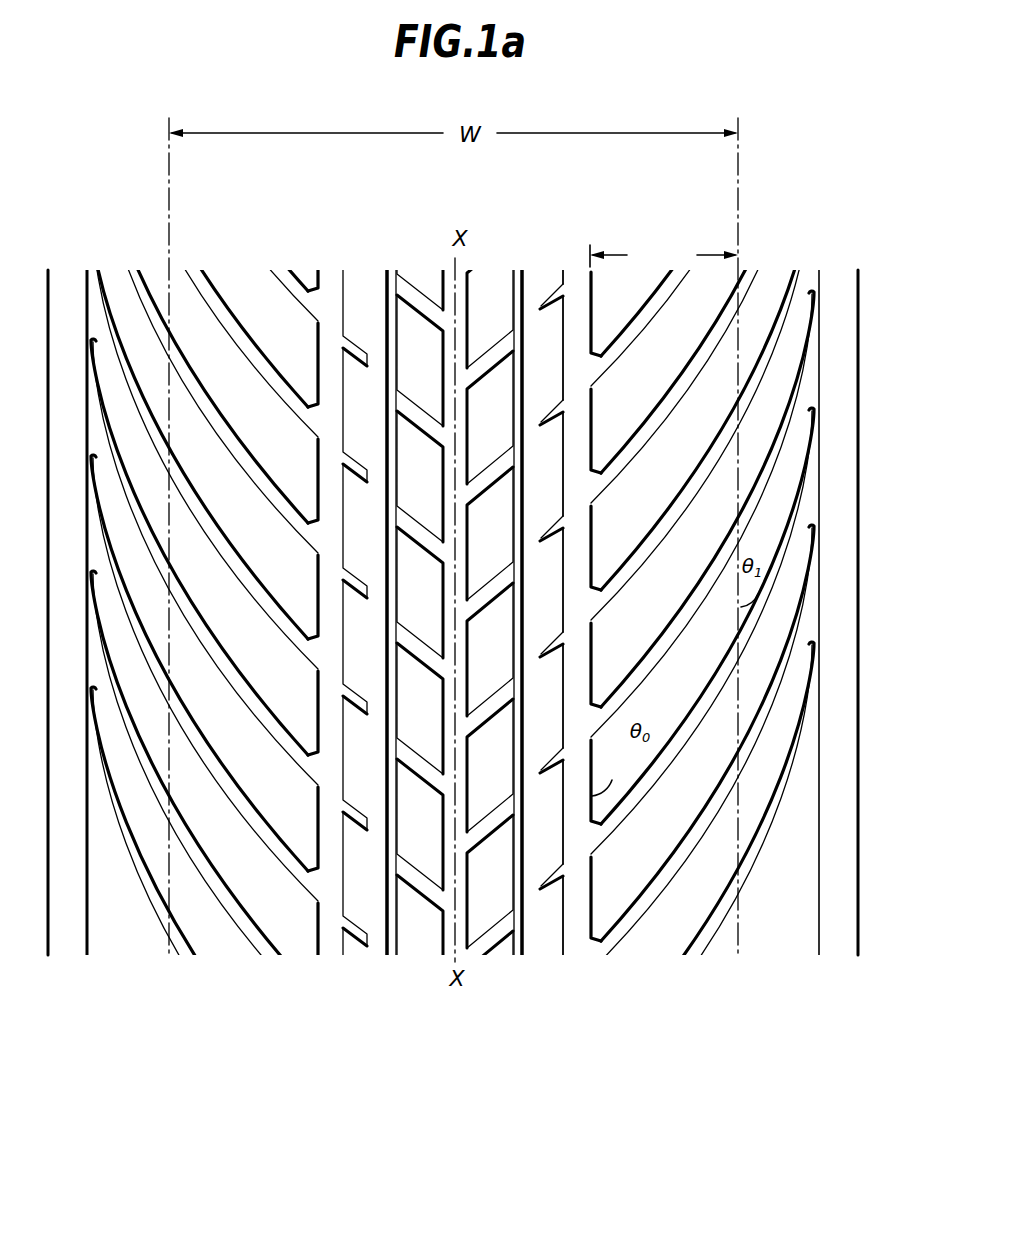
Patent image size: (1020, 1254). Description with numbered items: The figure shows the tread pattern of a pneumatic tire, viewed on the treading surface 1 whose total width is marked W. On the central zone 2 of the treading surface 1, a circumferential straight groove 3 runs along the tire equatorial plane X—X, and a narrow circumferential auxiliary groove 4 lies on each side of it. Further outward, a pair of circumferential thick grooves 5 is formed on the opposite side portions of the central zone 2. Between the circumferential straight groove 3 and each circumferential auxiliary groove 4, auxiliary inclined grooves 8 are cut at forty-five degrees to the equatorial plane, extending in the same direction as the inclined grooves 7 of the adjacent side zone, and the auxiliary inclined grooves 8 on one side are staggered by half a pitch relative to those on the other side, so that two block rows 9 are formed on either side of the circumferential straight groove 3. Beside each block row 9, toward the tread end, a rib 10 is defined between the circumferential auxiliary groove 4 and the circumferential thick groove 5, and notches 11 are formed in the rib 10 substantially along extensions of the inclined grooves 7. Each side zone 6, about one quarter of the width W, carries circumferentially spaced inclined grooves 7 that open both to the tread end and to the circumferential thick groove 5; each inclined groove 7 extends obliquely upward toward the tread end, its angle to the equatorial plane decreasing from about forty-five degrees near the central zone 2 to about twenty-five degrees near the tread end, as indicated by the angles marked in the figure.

The treading surface 1 is at (172, 1078).
The central zone 2 is at (585, 1022).
The circumferential straight groove 3 is at (463, 283).
The circumferential auxiliary groove 4 is at (396, 278).
The circumferential thick groove 5 is at (322, 290).
The side zone 6 is at (169, 1022).
The inclined groove 7 is at (220, 545).
The auxiliary inclined groove 8 is at (420, 523).
The block row 9 is at (415, 272).
The rib 10 is at (365, 283).
The notch 11 is at (358, 468).